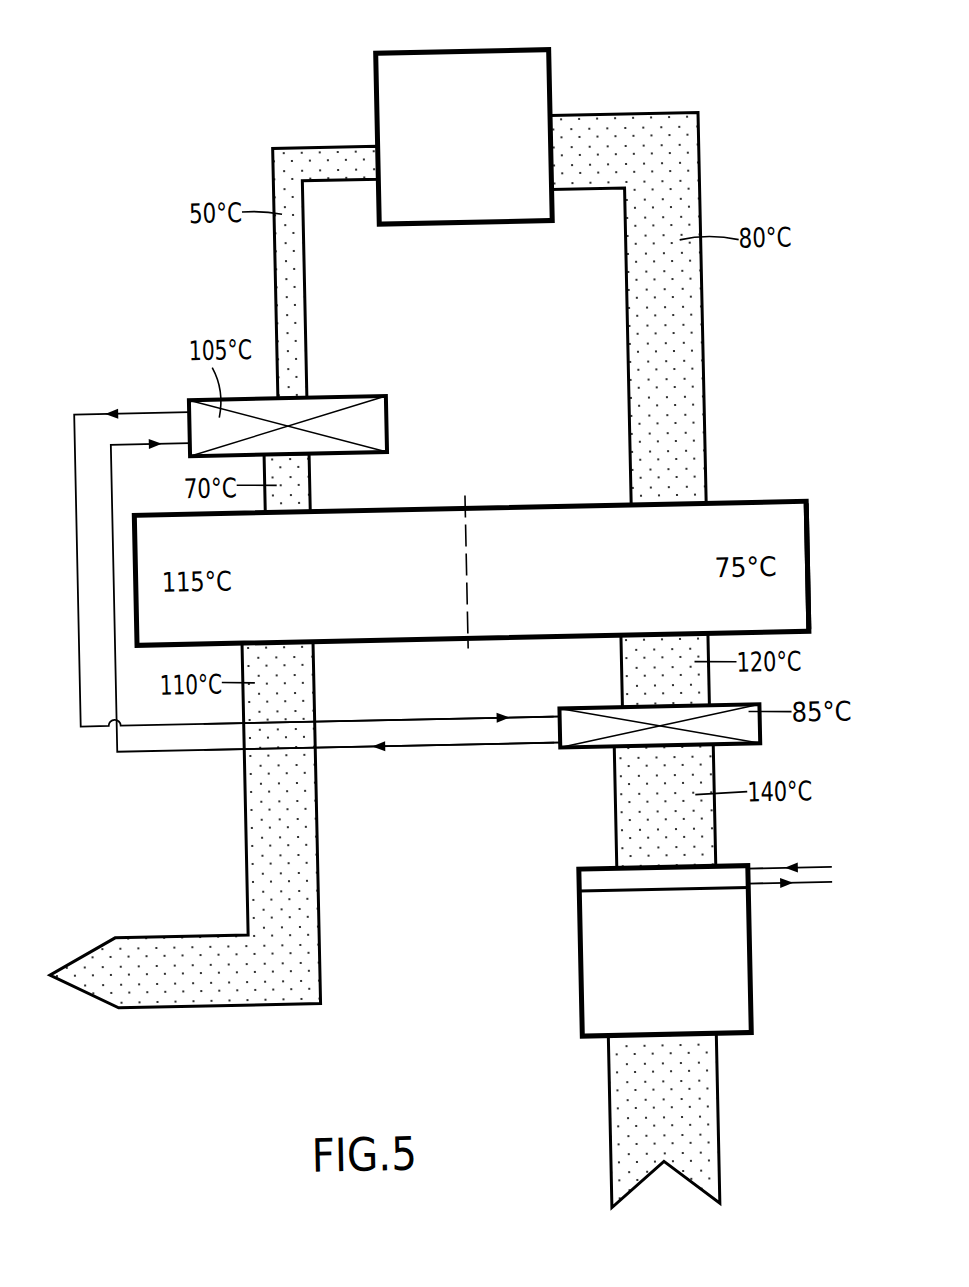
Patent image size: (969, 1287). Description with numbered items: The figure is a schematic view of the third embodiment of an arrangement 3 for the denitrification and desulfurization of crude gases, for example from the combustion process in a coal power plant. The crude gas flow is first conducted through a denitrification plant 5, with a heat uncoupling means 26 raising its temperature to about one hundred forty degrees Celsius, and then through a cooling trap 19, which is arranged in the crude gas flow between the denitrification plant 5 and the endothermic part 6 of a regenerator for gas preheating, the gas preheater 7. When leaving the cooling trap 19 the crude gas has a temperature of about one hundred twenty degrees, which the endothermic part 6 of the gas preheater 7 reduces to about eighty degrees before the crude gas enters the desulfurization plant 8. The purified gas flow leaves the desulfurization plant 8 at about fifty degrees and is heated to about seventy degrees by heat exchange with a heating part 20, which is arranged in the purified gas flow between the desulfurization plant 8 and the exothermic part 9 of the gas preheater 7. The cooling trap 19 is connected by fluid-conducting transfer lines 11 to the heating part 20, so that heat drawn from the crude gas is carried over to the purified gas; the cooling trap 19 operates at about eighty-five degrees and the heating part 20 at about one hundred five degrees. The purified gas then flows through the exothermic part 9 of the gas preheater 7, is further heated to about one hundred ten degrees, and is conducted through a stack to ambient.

The arrangement 3 is at (644, 82).
The denitrification plant 5 is at (665, 973).
The endothermic part 6 is at (797, 539).
The gas preheater 7 is at (491, 583).
The desulfurization plant 8 is at (461, 148).
The exothermic part 9 is at (144, 565).
The transfer lines 11 is at (453, 720).
The cooling trap 19 is at (568, 760).
The heating part 20 is at (341, 386).
The heat uncoupling means 26 is at (585, 882).